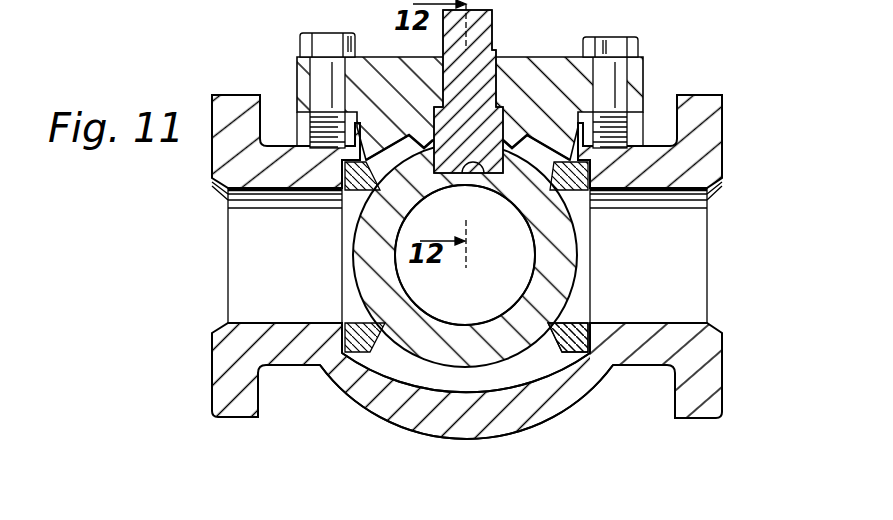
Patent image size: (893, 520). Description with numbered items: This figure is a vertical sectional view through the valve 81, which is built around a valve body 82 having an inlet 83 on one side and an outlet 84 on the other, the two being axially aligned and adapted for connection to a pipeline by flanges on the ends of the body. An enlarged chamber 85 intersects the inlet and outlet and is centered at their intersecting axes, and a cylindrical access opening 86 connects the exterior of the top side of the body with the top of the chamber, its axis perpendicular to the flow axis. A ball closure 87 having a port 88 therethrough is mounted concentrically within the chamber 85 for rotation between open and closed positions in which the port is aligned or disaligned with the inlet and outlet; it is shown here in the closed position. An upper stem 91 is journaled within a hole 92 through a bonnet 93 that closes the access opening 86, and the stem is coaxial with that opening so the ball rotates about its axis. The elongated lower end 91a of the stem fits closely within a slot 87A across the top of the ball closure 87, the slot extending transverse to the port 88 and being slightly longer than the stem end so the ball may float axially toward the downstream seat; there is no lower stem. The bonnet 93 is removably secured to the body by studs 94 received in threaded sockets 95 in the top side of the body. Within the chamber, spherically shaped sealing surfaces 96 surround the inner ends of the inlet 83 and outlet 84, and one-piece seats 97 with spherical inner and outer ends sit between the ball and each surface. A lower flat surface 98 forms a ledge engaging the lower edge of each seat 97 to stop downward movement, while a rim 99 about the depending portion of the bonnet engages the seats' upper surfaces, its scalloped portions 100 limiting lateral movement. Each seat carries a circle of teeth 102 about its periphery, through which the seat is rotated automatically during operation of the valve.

The valve 81 is at (350, 411).
The valve body 82 is at (547, 416).
The inlet 83 is at (253, 322).
The outlet 84 is at (678, 323).
The enlarged chamber 85 is at (468, 392).
The cylindrical access opening 86 is at (571, 150).
The ball closure 87 is at (575, 278).
The slot 87A is at (484, 175).
The port 88 is at (541, 253).
The upper stem 91 is at (497, 70).
The lower end of stem 91a is at (457, 176).
The hole 92 is at (440, 55).
The bonnet 93 is at (643, 55).
The studs 94 is at (298, 42).
The threaded sockets 95 is at (310, 135).
The spherically shaped sealing surfaces 96 is at (348, 210).
The seats 97 is at (590, 338).
The lower flat surface 98 is at (397, 347).
The rim 99 is at (540, 190).
The scalloped portions 100 is at (578, 200).
The circle of teeth 102 is at (525, 352).